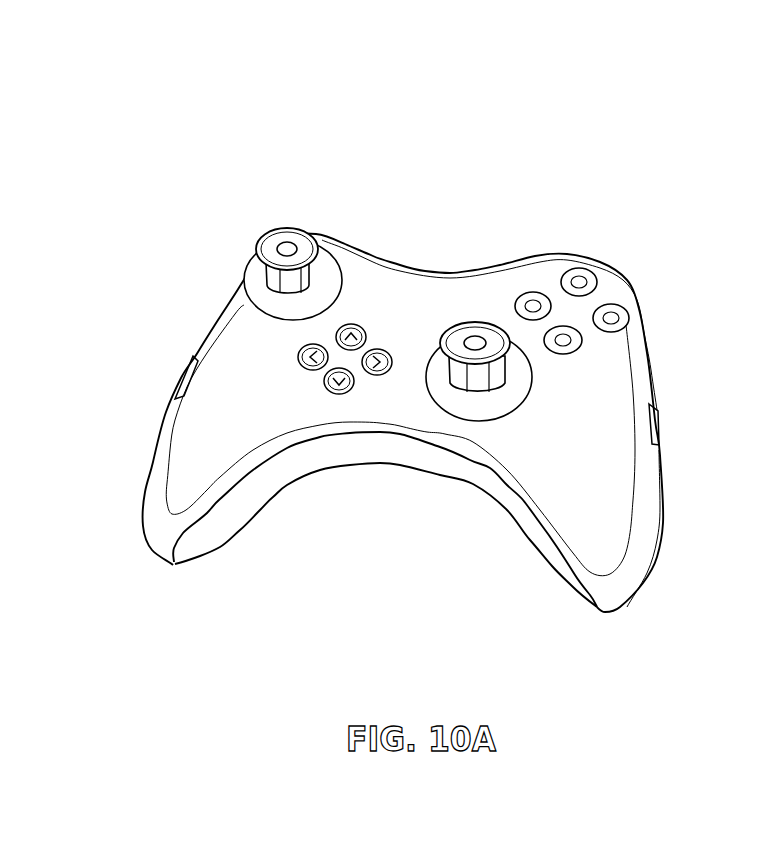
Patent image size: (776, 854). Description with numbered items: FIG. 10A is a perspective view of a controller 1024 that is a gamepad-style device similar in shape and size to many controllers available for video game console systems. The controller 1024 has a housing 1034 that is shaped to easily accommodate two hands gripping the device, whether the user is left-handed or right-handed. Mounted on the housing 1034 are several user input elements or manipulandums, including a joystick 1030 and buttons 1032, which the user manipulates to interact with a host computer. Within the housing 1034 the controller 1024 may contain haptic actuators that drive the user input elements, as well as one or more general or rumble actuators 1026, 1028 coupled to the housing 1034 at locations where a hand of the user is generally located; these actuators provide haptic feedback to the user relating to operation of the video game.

The controller 1024 is at (206, 183).
The rumble actuator 1026 is at (190, 367).
The rumble actuator 1028 is at (658, 433).
The joystick 1030 is at (441, 332).
The buttons 1032 is at (581, 281).
The housing 1034 is at (645, 365).